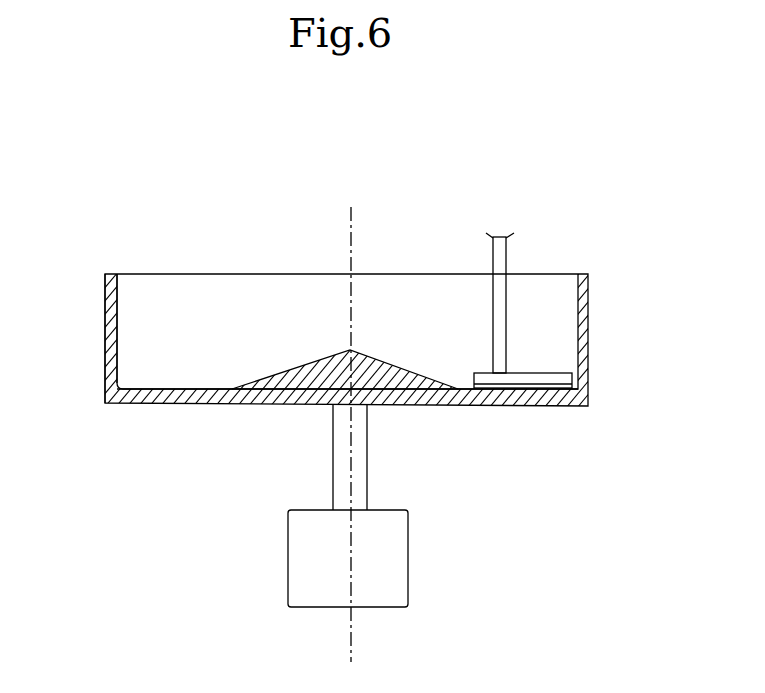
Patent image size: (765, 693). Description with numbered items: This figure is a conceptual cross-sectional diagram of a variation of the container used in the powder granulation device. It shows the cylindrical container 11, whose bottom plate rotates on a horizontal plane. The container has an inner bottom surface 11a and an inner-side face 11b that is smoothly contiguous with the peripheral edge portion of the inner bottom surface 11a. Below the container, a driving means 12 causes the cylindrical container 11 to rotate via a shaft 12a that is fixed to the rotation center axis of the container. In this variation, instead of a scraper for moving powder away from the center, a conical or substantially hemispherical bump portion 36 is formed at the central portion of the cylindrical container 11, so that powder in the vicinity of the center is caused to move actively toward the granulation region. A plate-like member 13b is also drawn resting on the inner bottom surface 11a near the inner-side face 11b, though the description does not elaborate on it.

The cylindrical container 11 is at (597, 310).
The inner bottom surface 11a is at (185, 380).
The inner-side face 11b is at (128, 321).
The bump portion 36 is at (374, 358).
The plate with rod 13b is at (533, 378).
The shaft 12a is at (340, 455).
The driving means 12 is at (385, 558).